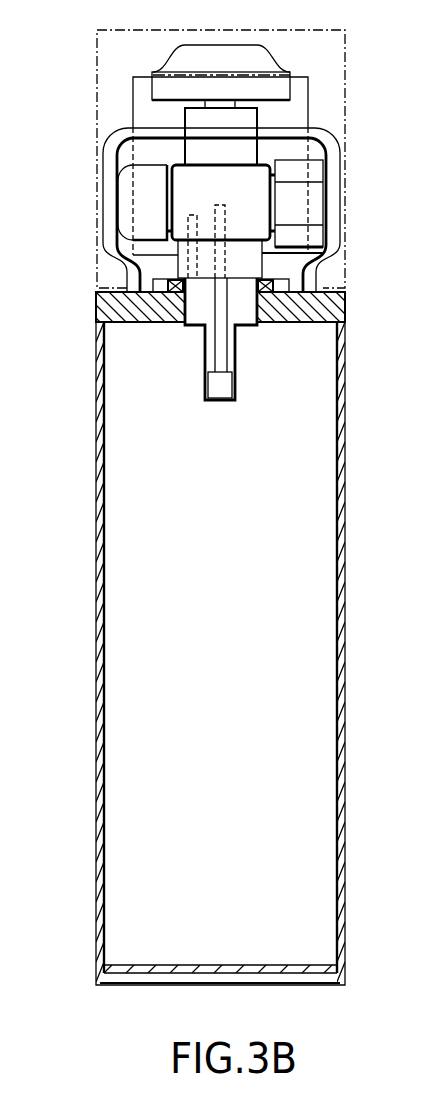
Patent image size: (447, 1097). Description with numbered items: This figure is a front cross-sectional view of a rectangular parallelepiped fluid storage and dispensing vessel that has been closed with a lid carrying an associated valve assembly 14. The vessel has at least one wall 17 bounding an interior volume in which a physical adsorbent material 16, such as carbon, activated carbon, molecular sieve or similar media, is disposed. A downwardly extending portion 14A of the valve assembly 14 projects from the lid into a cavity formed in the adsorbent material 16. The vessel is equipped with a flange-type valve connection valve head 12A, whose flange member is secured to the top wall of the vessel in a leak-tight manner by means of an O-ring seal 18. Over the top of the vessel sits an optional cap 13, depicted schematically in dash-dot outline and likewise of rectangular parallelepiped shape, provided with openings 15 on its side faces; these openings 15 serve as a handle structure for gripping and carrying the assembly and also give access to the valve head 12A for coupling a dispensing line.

The valve head 12A is at (316, 208).
The cap 13 is at (345, 60).
The valve assembly 14 is at (99, 130).
The downwardly extending portion 14A is at (213, 350).
The openings 15 is at (300, 110).
The adsorbent material 16 is at (298, 658).
The wall 17 is at (95, 657).
The O-ring seal 18 is at (285, 272).